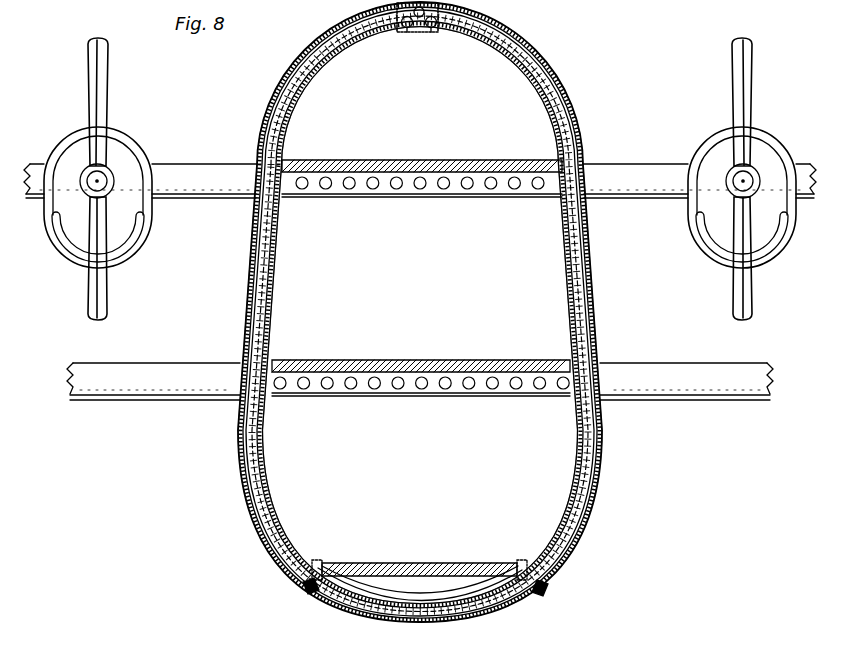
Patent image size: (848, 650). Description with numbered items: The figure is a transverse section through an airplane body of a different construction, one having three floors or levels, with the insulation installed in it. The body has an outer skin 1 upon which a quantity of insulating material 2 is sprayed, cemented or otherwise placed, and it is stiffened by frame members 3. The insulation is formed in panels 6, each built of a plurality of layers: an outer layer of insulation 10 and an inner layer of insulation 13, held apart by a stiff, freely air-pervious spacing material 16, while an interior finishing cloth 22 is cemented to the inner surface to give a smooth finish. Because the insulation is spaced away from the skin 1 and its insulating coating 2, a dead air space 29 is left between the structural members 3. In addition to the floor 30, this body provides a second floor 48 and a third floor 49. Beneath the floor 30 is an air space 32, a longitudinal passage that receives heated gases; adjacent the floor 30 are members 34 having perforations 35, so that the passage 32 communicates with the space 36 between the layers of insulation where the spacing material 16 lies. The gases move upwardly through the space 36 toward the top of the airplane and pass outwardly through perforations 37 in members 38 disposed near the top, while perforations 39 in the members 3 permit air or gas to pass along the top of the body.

The skin 1 is at (557, 79).
The insulating material 2 is at (563, 100).
The frame members 3 is at (418, 33).
The panels 6 is at (335, 79).
The outer layer of insulation 10 is at (507, 57).
The inner layer of insulation 13 is at (303, 95).
The spacing material 16 is at (563, 143).
The interior finishing cloth 22 is at (297, 128).
The dead air space 29 is at (532, 62).
The floor 30 is at (450, 561).
The air space 32 is at (441, 596).
The members 34 is at (310, 590).
The perforations 35 is at (324, 567).
The space between the layers of insulation 36 is at (283, 110).
The perforations 37 is at (401, 33).
The members 38 is at (445, 5).
The perforations 39 is at (419, 18).
The second floor 48 is at (410, 362).
The third floor 49 is at (447, 160).